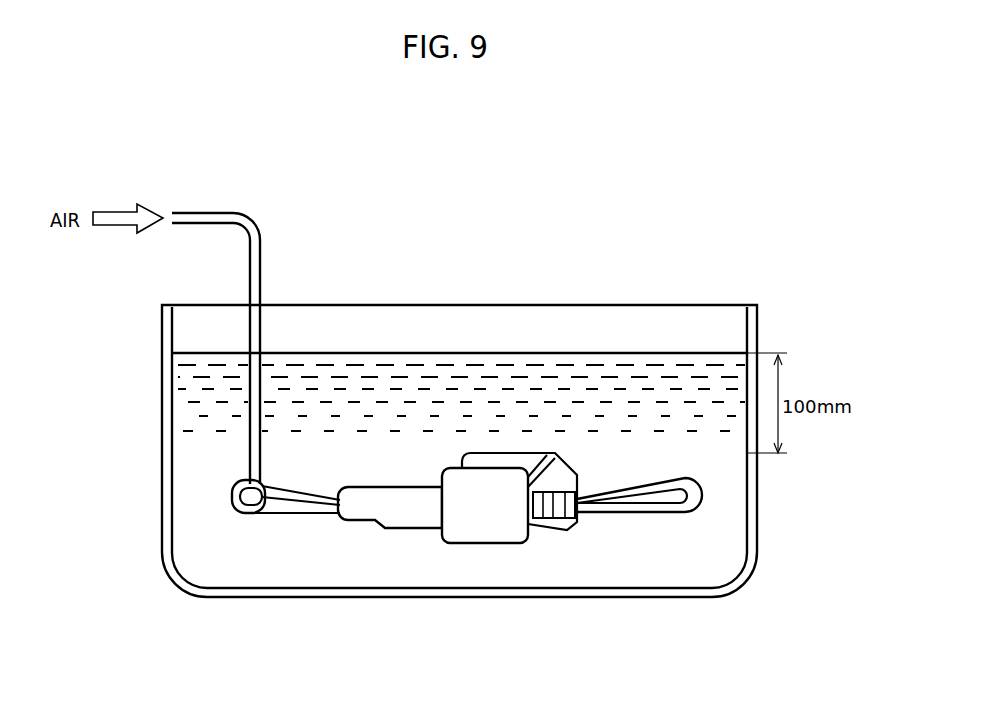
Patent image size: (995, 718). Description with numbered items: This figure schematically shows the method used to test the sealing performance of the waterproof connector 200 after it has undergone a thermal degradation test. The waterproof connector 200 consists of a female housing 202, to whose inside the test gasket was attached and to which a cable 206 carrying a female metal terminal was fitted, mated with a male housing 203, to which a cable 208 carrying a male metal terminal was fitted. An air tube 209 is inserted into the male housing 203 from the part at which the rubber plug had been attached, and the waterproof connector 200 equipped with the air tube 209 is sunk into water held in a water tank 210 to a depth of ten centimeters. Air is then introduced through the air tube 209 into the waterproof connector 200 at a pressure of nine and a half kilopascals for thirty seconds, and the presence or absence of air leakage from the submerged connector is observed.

The waterproof connector 200 is at (457, 575).
The female housing 202 is at (485, 532).
The male housing 203 is at (398, 522).
The cable 206 is at (700, 493).
The cable 208 is at (238, 515).
The air tube 209 is at (261, 240).
The water tank 210 is at (733, 330).